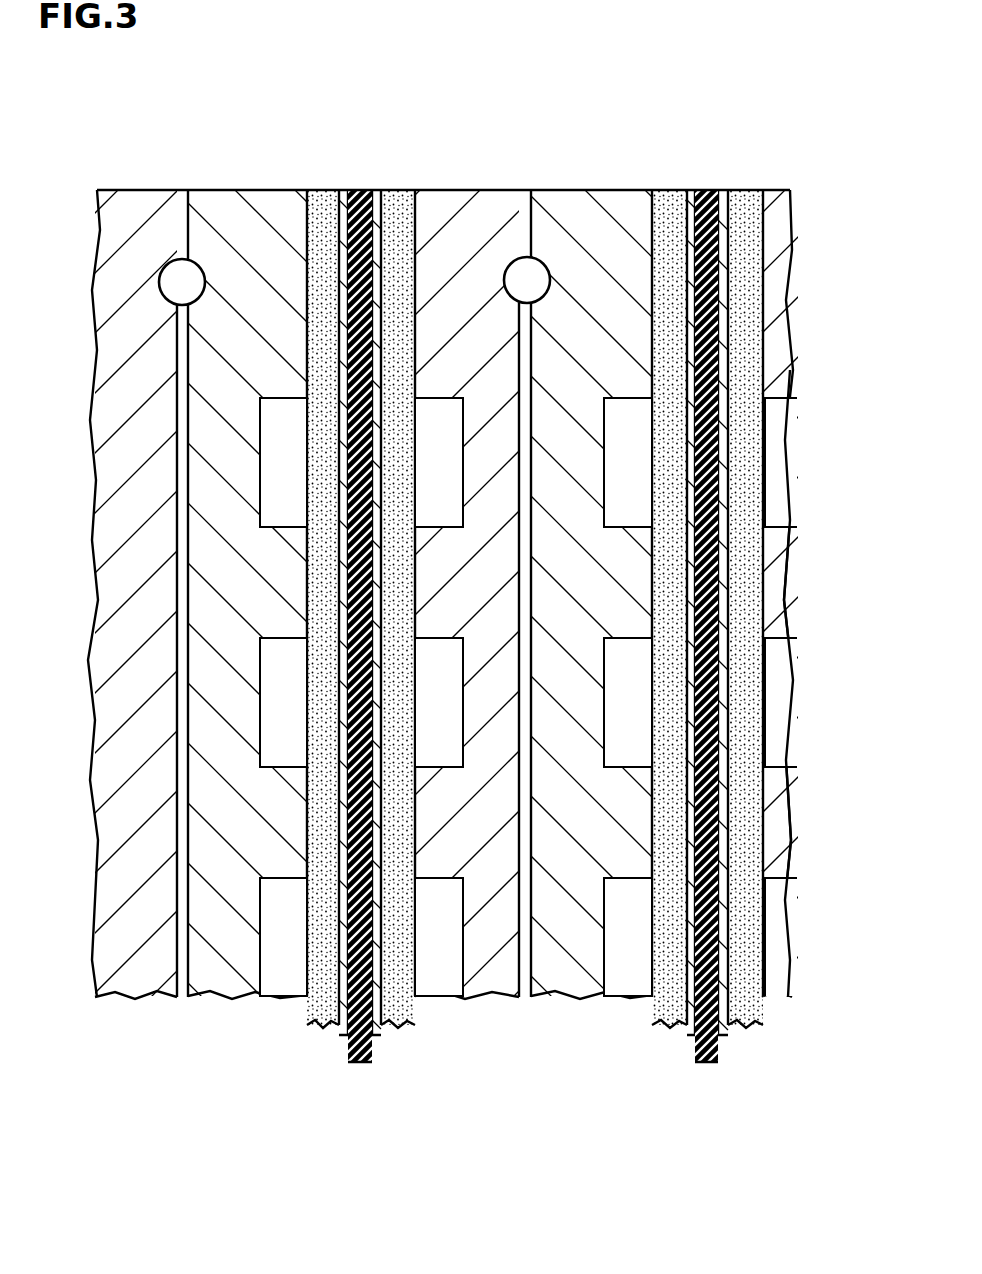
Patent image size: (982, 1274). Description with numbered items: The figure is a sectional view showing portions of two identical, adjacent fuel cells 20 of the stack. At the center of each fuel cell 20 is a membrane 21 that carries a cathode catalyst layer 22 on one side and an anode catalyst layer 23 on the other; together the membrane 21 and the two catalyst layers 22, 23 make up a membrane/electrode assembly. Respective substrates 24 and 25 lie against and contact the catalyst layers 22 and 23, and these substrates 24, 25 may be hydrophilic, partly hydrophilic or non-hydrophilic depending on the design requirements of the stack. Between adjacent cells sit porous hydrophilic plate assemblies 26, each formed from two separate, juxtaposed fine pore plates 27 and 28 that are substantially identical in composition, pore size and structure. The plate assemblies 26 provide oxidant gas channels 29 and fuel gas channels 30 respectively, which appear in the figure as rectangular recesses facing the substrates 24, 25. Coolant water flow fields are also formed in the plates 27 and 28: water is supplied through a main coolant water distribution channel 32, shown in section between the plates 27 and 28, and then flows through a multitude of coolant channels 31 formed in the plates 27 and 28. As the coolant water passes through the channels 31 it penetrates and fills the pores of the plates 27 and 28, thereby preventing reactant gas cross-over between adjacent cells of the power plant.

The fuel cell 20 is at (805, 1071).
The membrane 21 is at (362, 190).
The cathode catalyst layer 22 is at (374, 192).
The anode catalyst layer 23 is at (346, 192).
The substrate 24 is at (397, 197).
The substrate 25 is at (323, 192).
The porous hydrophilic plate assembly 26 is at (305, 177).
The fine pore plate 27 is at (115, 588).
The fine pore plate 28 is at (216, 591).
The oxidant gas channel 29 is at (422, 483).
The fuel gas channel 30 is at (266, 483).
The coolant channel 31 is at (177, 399).
The main coolant water distribution channel 32 is at (168, 296).